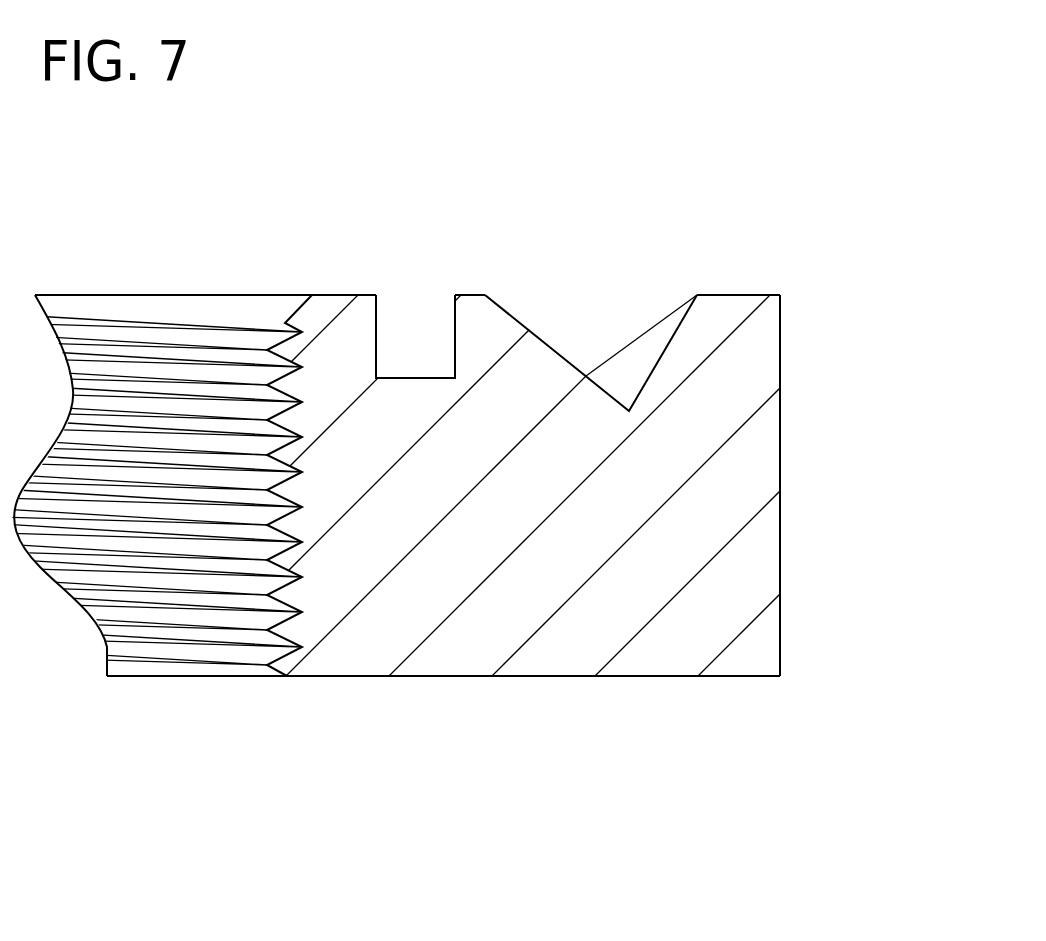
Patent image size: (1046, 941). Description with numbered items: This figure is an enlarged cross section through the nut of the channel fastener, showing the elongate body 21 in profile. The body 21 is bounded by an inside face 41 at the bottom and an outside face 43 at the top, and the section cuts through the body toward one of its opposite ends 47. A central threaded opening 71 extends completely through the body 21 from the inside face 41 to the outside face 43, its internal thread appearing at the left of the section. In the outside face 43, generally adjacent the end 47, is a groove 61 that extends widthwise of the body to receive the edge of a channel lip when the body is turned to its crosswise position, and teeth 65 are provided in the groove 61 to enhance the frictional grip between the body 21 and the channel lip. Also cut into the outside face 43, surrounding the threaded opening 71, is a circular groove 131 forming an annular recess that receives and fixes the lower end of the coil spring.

The elongate body 21 is at (790, 430).
The inside face 41 is at (683, 676).
The outside face 43 is at (337, 295).
The opposite ends 47 is at (782, 565).
The groove 61 is at (570, 332).
The teeth 65 is at (653, 325).
The central threaded opening 71 is at (128, 314).
The circular groove 131 is at (455, 335).